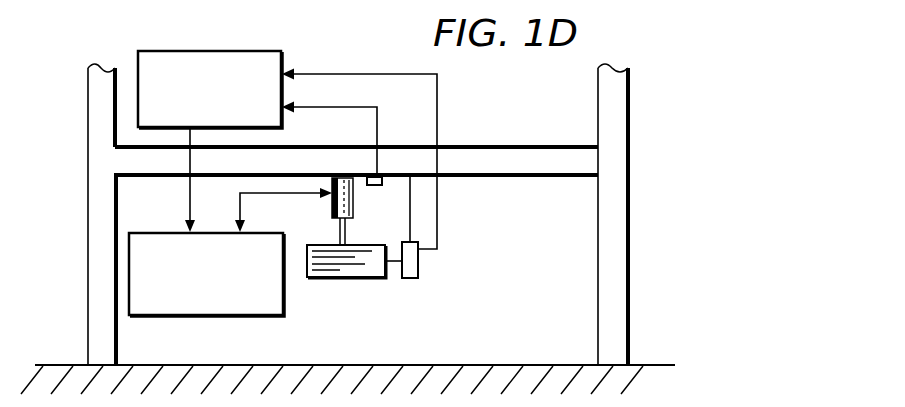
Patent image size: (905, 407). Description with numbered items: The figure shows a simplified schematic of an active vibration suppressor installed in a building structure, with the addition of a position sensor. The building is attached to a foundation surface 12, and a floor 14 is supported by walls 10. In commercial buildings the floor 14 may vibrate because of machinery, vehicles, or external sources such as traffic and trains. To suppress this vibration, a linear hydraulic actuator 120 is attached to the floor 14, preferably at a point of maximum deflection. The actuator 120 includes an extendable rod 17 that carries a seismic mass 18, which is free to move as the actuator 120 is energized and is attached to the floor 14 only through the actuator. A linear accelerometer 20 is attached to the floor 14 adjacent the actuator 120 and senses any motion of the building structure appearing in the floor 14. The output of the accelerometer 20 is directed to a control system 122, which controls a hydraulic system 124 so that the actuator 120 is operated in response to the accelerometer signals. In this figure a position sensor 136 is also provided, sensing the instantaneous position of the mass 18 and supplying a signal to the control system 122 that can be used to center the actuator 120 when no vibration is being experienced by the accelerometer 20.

The walls 10 is at (99, 212).
The foundation surface 12 is at (432, 365).
The floor 14 is at (560, 156).
The extendable rod 17 is at (347, 223).
The seismic mass 18 is at (373, 269).
The linear accelerometer 20 is at (375, 186).
The linear hydraulic actuator 120 is at (345, 176).
The control system 122 is at (283, 60).
The hydraulic system 124 is at (268, 306).
The position sensor 136 is at (418, 268).